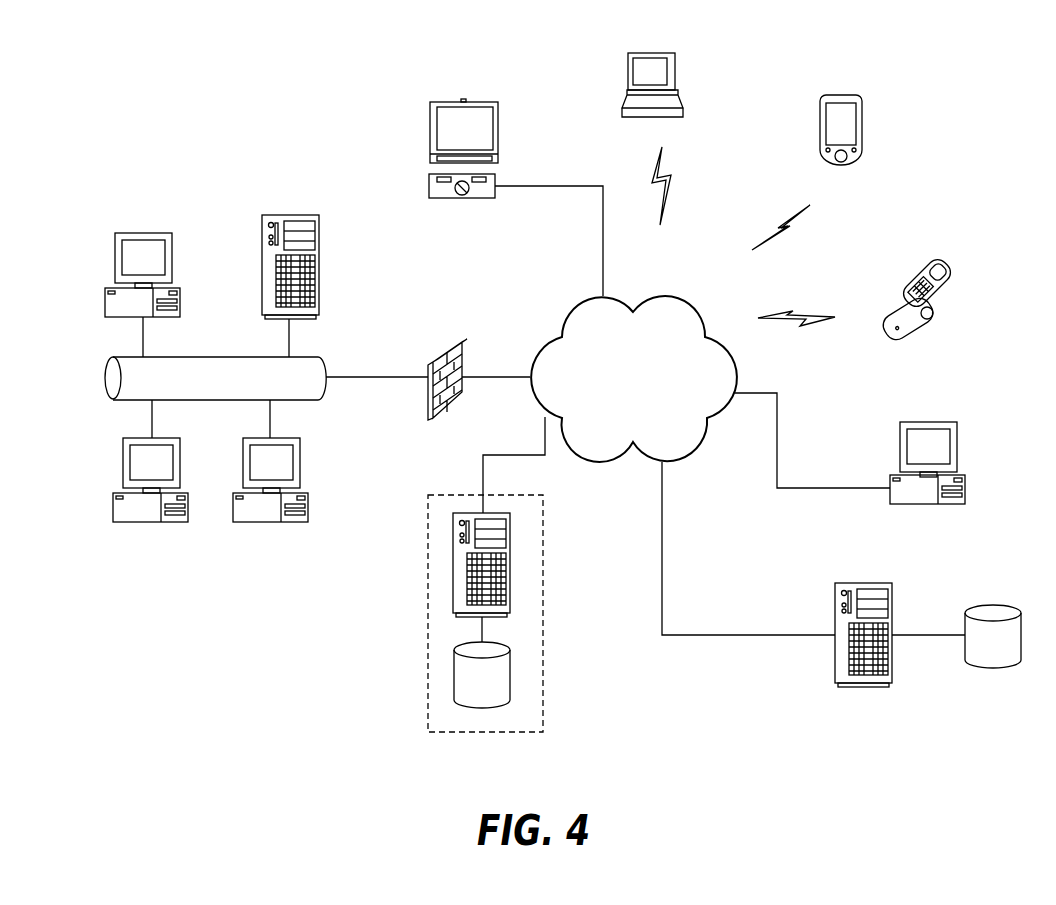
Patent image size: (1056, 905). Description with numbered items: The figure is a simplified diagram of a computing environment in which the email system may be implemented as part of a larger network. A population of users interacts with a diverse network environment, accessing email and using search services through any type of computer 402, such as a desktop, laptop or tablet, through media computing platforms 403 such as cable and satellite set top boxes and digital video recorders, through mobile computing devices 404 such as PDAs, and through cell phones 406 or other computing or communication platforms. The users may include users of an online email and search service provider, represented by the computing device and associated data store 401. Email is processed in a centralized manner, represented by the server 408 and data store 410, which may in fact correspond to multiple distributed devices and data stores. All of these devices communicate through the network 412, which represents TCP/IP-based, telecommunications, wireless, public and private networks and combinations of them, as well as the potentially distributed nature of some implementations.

The computing device and associated data store 401 is at (543, 648).
The computer 402 is at (115, 263).
The media computing platform 403 is at (429, 185).
The mobile computing device 404 is at (818, 103).
The cell phone 406 is at (917, 270).
The server 408 is at (843, 583).
The data store 410 is at (992, 605).
The network 412 is at (573, 308).